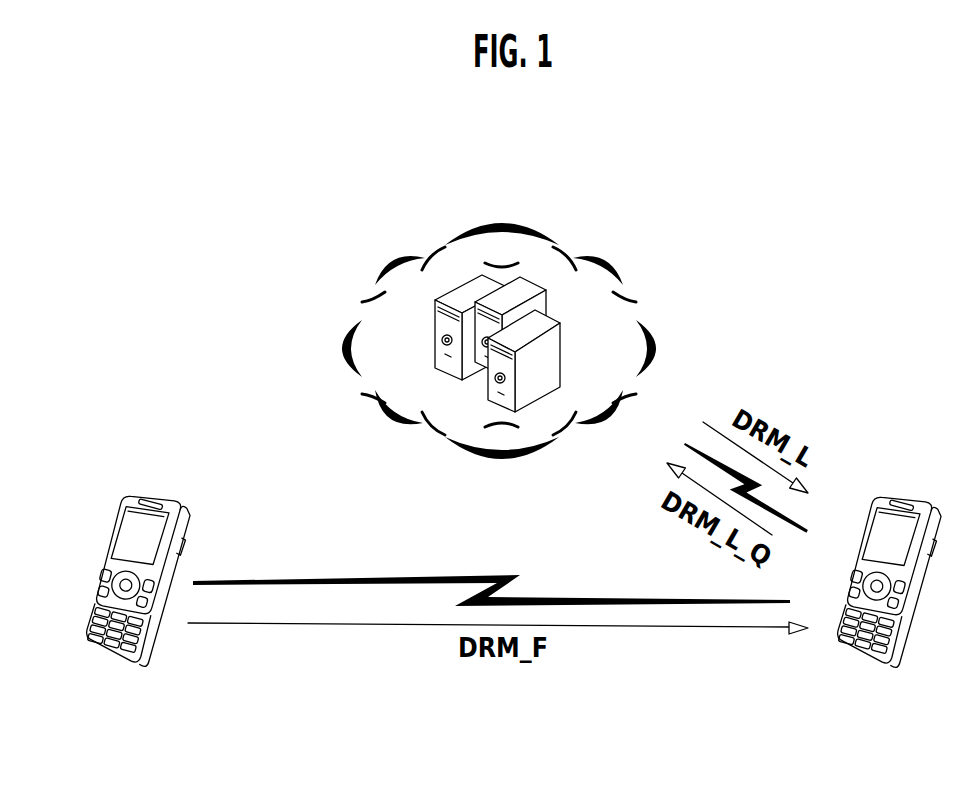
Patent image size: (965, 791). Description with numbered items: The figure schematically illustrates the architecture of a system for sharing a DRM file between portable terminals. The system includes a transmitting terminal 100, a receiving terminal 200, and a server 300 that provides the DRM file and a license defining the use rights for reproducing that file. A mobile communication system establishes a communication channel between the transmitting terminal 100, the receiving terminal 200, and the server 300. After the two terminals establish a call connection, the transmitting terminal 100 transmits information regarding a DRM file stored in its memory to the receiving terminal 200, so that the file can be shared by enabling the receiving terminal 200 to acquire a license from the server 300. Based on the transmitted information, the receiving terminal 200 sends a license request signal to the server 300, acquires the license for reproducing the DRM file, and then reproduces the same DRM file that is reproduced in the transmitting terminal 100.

The transmitting terminal 100 is at (97, 664).
The receiving terminal 200 is at (852, 668).
The server 300 is at (502, 223).